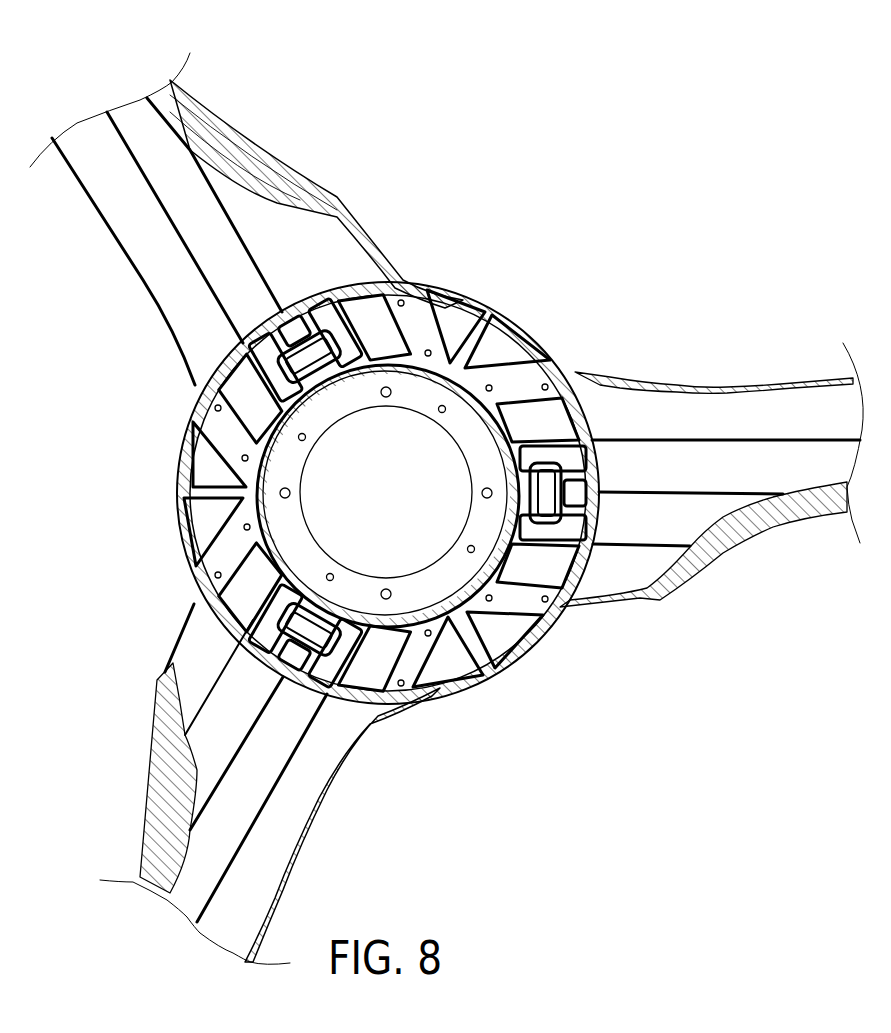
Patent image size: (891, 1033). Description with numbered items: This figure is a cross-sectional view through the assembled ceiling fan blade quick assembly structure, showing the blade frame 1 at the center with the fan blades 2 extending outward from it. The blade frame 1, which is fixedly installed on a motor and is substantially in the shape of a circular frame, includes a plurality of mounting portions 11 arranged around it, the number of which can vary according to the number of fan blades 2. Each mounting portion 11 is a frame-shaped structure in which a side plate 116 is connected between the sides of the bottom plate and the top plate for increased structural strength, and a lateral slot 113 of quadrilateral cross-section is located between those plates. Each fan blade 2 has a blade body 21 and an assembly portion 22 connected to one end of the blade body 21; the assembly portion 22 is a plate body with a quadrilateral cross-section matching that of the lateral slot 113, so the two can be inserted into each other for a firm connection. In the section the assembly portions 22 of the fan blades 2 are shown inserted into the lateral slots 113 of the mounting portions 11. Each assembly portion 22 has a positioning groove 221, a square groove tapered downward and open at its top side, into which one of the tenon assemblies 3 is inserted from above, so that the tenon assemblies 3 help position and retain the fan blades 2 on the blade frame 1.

The blade frame 1 is at (385, 368).
The mounting portion 11 is at (478, 660).
The lateral slot 113 is at (235, 558).
The side plate 116 is at (455, 670).
The fan blade 2 is at (322, 822).
The blade body 21 is at (218, 773).
The assembly portion 22 is at (340, 640).
The positioning groove 221 is at (333, 655).
The tenon assembly 3 is at (312, 598).